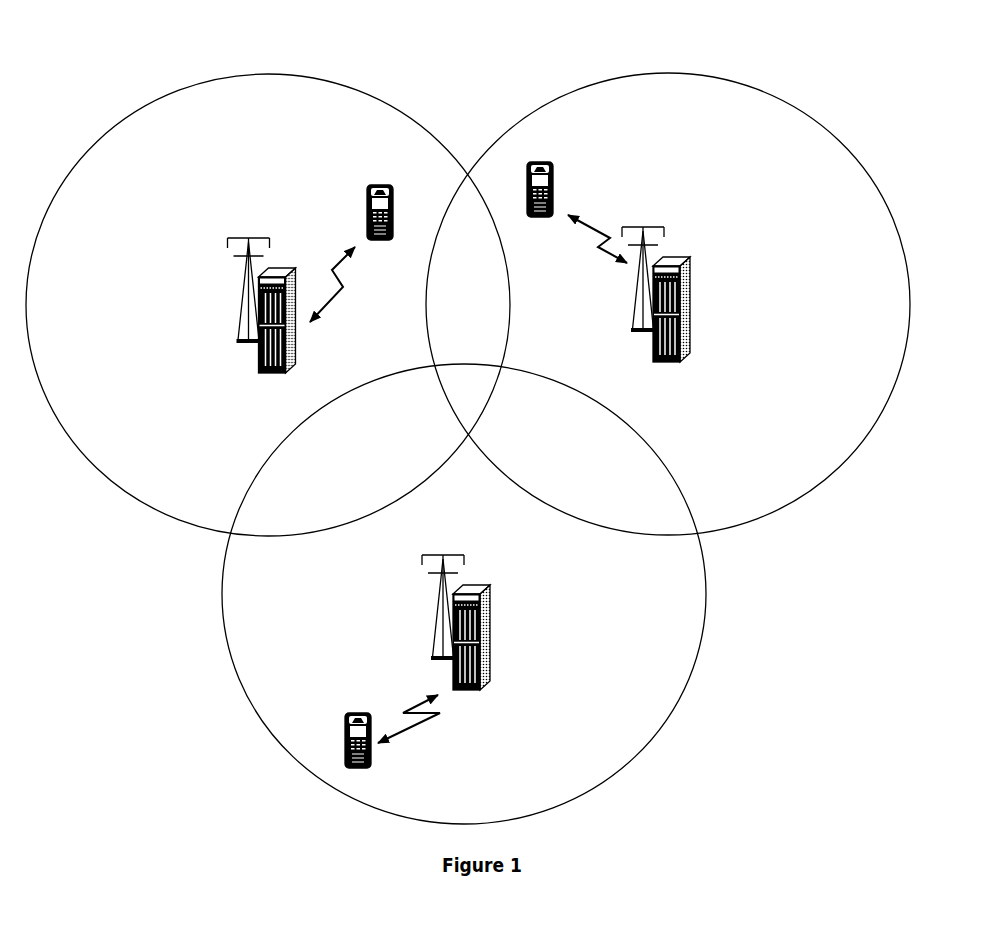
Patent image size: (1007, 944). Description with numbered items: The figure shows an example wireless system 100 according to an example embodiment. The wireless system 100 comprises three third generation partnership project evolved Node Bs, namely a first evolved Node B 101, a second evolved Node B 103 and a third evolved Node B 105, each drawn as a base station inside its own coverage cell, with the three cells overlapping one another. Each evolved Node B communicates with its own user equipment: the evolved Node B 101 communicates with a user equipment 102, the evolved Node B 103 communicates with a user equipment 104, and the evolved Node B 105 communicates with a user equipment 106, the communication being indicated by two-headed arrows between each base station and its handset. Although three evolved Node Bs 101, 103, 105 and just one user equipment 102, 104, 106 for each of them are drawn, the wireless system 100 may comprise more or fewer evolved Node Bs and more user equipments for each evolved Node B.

The wireless system 100 is at (880, 147).
The evolved Node B 101 is at (223, 310).
The user equipment 102 is at (350, 175).
The evolved Node B 103 is at (620, 340).
The user equipment 104 is at (560, 180).
The evolved Node B 105 is at (418, 630).
The user equipment 106 is at (352, 710).